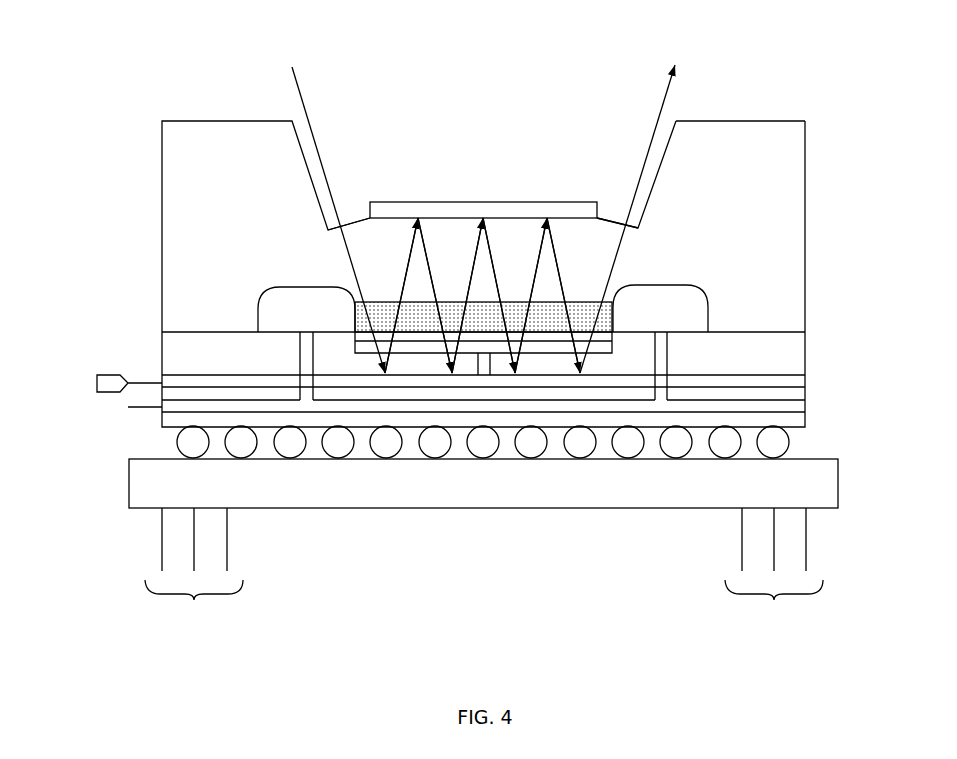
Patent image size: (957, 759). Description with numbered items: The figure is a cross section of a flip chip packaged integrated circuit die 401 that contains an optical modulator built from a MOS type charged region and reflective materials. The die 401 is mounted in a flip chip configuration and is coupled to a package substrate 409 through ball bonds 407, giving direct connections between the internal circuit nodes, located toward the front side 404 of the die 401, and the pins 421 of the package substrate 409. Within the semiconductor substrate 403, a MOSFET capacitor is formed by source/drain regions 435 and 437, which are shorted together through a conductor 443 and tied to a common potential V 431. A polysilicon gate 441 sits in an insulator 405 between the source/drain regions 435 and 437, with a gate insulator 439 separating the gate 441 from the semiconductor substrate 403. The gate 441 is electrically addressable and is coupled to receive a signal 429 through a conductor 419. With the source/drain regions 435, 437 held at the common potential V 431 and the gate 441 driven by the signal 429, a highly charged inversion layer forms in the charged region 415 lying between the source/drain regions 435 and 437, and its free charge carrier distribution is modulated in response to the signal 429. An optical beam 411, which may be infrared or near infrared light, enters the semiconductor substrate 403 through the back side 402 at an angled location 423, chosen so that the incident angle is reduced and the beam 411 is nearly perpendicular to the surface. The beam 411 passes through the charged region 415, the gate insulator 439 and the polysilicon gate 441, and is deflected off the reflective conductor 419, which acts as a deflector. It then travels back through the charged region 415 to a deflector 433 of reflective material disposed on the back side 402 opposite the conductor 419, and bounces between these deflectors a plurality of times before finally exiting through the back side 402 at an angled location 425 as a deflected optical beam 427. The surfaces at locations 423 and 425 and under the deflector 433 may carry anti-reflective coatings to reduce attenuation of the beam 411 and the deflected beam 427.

The integrated circuit die 401 is at (840, 61).
The back side 402 is at (740, 118).
The semiconductor substrate 403 is at (805, 165).
The front side 404 is at (797, 427).
The insulator 405 is at (805, 355).
The ball bonds 407 is at (532, 450).
The package substrate 409 is at (838, 485).
The optical beam 411 is at (313, 132).
The charged region 415 is at (608, 298).
The conductor 419 is at (805, 378).
The pins 421 is at (484, 566).
The location 423 is at (353, 222).
The location 425 is at (613, 217).
The deflected optical beam 427 is at (652, 128).
The signal 429 is at (67, 375).
The voltage supply 431 is at (113, 418).
The deflector 433 is at (482, 202).
The source/drain region 435 is at (275, 288).
The source/drain region 437 is at (687, 285).
The gate insulator 439 is at (597, 333).
The polysilicon gate 441 is at (593, 350).
The conductor 443 is at (805, 402).